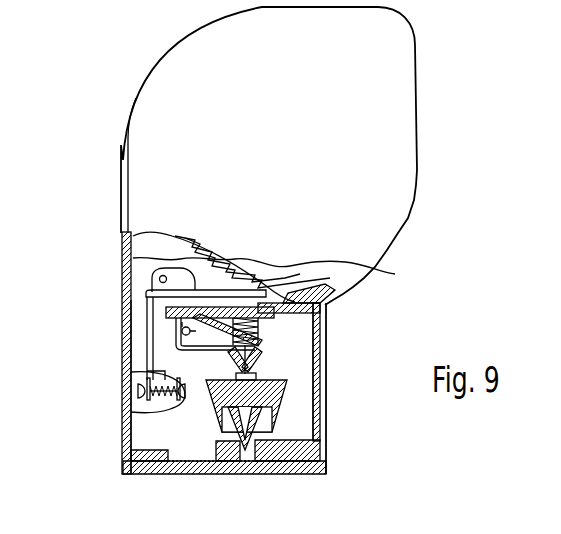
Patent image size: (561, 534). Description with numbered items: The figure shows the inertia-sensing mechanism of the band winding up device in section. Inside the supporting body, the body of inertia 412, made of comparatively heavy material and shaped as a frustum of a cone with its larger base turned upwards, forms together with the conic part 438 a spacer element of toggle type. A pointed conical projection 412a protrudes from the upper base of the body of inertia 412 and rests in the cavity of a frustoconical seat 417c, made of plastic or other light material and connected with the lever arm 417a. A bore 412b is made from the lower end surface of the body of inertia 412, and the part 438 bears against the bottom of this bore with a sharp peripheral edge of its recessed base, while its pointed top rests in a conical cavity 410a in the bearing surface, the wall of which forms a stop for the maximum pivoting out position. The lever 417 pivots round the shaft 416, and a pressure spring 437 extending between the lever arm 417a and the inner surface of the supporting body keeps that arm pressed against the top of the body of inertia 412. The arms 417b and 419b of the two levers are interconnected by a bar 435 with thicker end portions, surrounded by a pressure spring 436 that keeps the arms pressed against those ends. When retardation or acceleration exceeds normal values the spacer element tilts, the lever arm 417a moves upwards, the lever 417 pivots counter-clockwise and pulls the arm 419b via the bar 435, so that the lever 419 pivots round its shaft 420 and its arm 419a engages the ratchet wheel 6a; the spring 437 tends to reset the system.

The ratchet wheel 6a is at (133, 257).
The lever arm 419a is at (178, 268).
The shaft 420 is at (159, 280).
The lever arm 417b is at (146, 318).
The lever 419 is at (147, 336).
The lever arm 419b is at (147, 371).
The pressure spring 436 is at (147, 388).
The bar 435 is at (150, 406).
The lever 417 is at (201, 360).
The shaft 416 is at (197, 326).
The lever arm 417a is at (395, 274).
The pressure spring 437 is at (258, 328).
The seat 417c is at (278, 350).
The conical projection 412a is at (262, 372).
The body of inertia 412 is at (287, 398).
The bore 412b is at (262, 427).
The conic part 438 is at (290, 449).
The conical cavity 410a is at (255, 467).